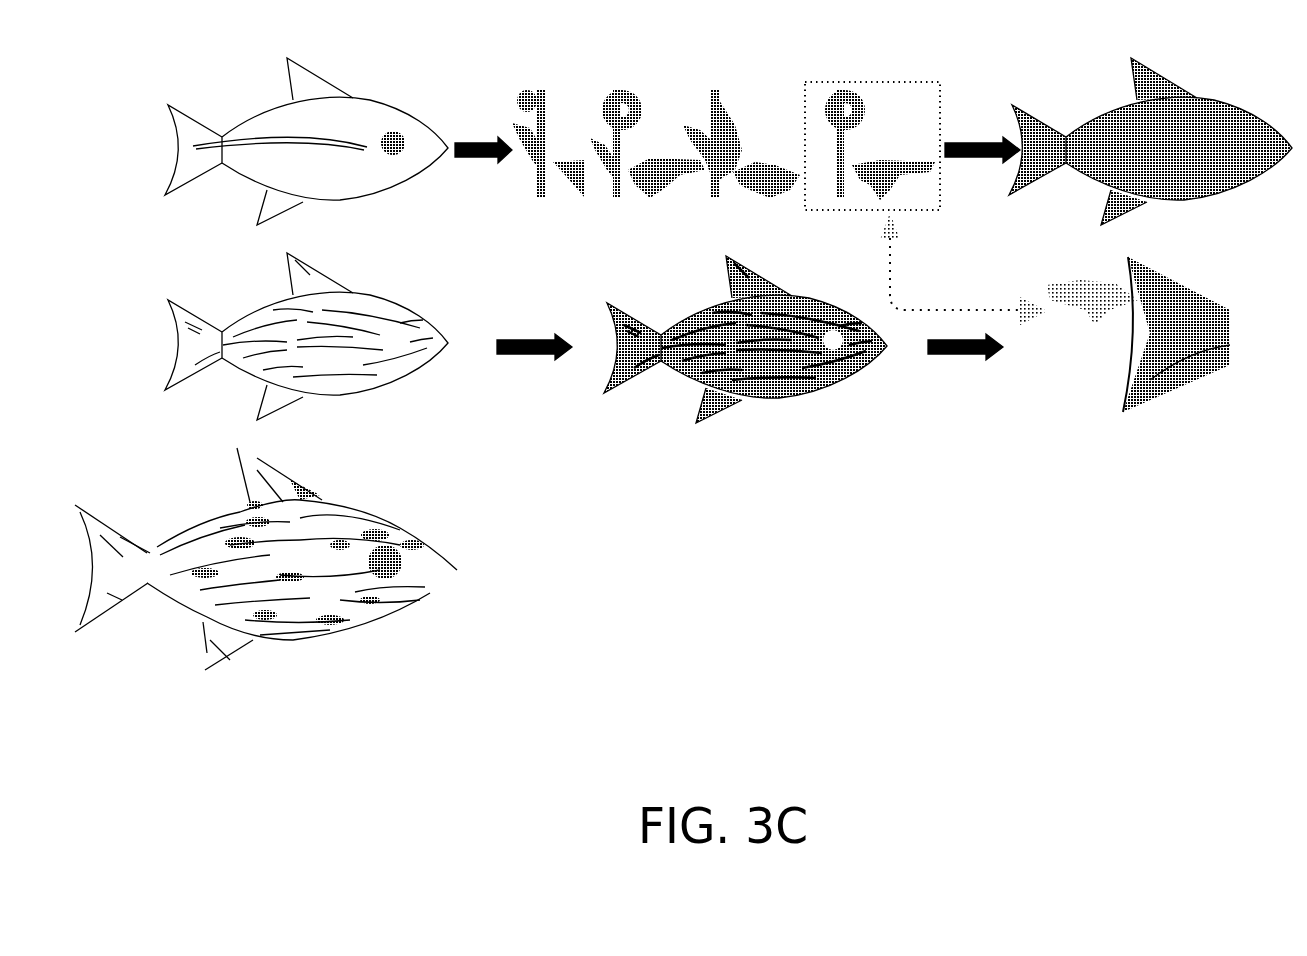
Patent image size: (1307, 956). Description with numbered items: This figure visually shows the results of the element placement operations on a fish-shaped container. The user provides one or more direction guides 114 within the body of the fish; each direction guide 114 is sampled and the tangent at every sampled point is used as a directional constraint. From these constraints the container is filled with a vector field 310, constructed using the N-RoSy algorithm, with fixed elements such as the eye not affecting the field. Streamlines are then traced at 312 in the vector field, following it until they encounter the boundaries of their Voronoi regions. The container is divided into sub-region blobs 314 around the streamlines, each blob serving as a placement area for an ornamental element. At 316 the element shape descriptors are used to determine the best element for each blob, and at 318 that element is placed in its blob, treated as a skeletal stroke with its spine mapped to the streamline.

The direction guide 114 is at (252, 148).
The vector field 310 is at (1107, 87).
The streamline tracing 312 is at (227, 310).
The sub-region blob 314 is at (657, 330).
The best element determination 316 is at (1228, 373).
The element placement 318 is at (422, 627).